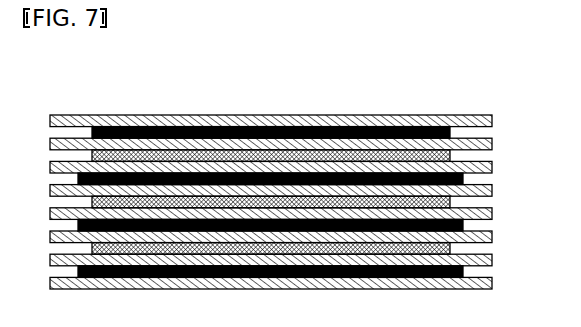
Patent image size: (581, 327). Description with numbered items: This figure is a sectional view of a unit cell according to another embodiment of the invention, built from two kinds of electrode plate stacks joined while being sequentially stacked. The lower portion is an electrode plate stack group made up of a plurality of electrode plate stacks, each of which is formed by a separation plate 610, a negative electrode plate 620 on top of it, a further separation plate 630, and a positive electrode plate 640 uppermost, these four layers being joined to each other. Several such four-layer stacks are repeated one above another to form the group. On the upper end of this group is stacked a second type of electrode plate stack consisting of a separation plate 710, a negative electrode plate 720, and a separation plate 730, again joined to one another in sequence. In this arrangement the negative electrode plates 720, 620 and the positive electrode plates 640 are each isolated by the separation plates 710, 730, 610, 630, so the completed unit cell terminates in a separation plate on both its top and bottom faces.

The separation plate 710 is at (494, 119).
The negative electrode plate 720 is at (455, 132).
The separation plate 730 is at (455, 155).
The positive electrode plate 640 is at (452, 248).
The separation plate 630 is at (494, 259).
The negative electrode plate 620 is at (465, 271).
The separation plate 610 is at (494, 287).